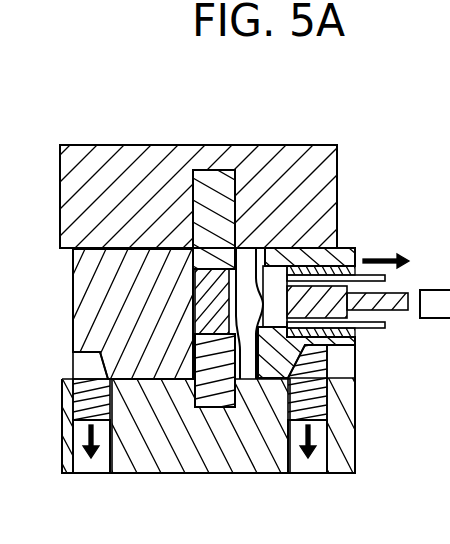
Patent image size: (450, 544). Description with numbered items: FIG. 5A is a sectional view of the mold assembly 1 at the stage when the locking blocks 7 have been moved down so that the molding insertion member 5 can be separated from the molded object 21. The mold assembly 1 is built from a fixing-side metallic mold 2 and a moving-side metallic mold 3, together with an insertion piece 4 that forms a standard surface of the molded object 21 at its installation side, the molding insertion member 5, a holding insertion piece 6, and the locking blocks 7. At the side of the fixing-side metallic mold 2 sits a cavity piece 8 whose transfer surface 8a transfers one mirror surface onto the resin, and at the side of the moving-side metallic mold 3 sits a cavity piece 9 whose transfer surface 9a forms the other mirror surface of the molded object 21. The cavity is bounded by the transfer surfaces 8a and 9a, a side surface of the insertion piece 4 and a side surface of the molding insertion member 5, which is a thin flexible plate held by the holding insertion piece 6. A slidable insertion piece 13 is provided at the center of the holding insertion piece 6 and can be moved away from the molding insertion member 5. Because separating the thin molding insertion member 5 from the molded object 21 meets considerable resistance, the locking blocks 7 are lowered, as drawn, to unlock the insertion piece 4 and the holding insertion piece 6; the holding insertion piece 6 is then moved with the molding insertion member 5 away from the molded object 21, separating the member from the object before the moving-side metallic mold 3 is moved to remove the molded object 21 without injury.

The mold assembly 1 is at (86, 134).
The fixing-side metallic mold 2 is at (60, 167).
The moving-side metallic mold 3 is at (125, 462).
The insertion piece 4 is at (73, 292).
The molding insertion member 5 is at (252, 345).
The holding insertion piece 6 is at (363, 255).
The locking blocks 7 is at (92, 360).
The cavity piece 8 is at (210, 180).
The transfer surface 8a is at (215, 186).
The cavity piece 9 is at (205, 398).
The transfer surface 9a is at (228, 340).
The slidable insertion piece 13 is at (405, 292).
The molded object 21 is at (190, 322).